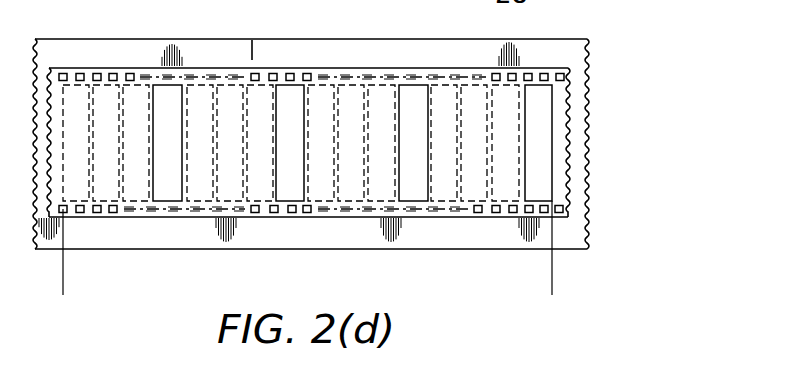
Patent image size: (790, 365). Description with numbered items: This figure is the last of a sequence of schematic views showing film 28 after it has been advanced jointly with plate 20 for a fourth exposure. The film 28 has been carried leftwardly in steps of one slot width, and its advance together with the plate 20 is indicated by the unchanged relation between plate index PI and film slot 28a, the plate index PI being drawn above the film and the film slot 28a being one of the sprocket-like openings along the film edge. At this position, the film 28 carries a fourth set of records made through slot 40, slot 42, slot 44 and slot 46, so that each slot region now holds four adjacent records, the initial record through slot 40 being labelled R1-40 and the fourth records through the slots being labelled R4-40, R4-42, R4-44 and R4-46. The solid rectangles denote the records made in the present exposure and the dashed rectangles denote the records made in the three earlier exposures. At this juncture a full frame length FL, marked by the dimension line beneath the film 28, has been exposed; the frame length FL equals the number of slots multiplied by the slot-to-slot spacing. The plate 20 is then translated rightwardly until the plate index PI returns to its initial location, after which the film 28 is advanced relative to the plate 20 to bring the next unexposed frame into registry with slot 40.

The plate 20 is at (422, 50).
The film 28 is at (562, 183).
The film slot 28a is at (256, 74).
The slot 40 is at (122, 143).
The slot 42 is at (245, 143).
The slot 44 is at (368, 143).
The slot 46 is at (491, 143).
The plate index PI is at (252, 48).
The frame length FL is at (552, 282).